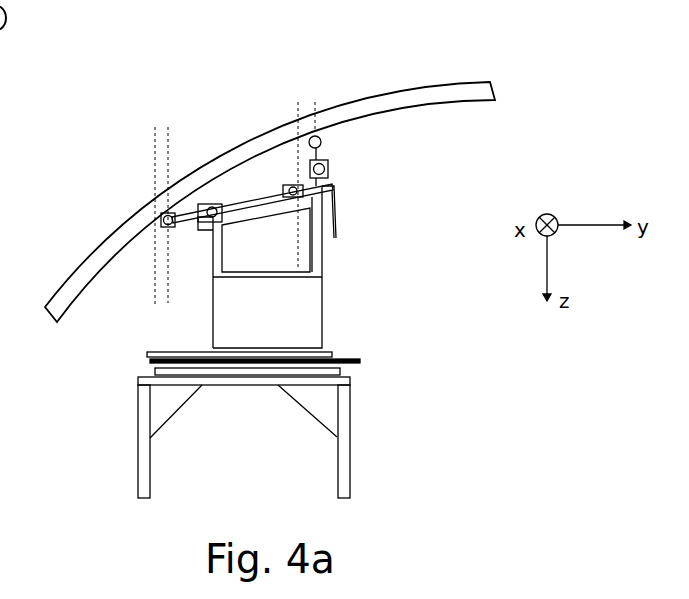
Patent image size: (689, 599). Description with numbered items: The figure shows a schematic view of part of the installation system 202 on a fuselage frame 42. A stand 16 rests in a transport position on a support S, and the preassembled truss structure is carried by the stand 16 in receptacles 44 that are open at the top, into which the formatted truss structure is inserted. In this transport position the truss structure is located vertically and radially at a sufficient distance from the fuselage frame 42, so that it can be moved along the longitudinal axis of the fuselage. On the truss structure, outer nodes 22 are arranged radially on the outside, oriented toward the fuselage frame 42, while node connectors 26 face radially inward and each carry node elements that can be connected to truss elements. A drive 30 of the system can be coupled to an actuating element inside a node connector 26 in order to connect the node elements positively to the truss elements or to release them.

The panel processing apparatus 202 is at (56, 18).
The fuselage frame 42 is at (102, 257).
The outer nodes 22 is at (160, 203).
The receptacles 44 is at (205, 195).
The node connectors 26 is at (338, 182).
The drive 30 is at (332, 192).
The stand 16 is at (323, 313).
The stand S is at (350, 440).